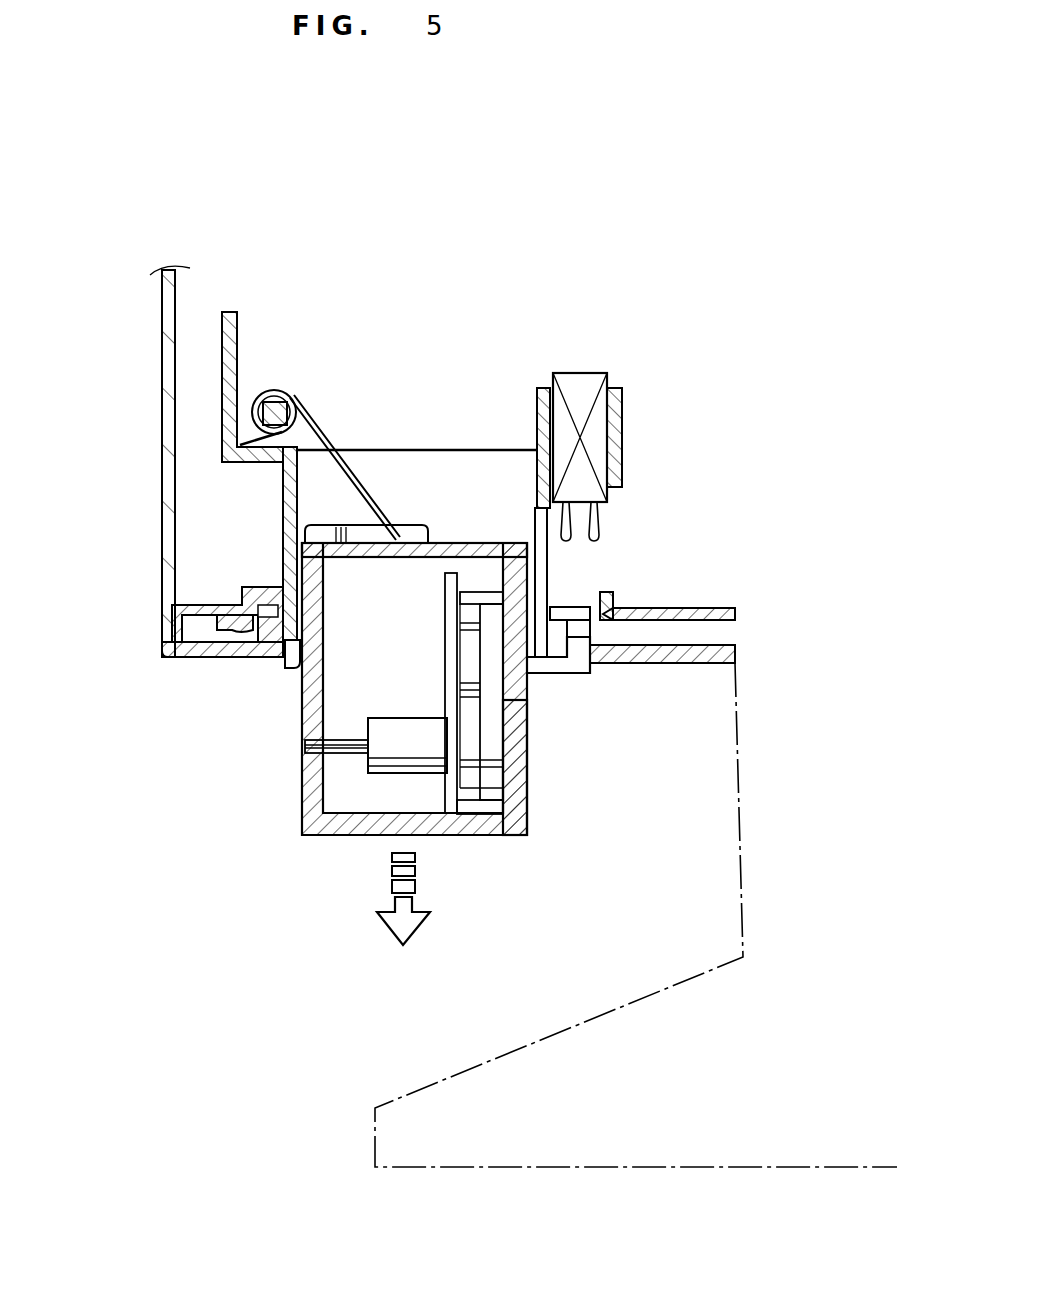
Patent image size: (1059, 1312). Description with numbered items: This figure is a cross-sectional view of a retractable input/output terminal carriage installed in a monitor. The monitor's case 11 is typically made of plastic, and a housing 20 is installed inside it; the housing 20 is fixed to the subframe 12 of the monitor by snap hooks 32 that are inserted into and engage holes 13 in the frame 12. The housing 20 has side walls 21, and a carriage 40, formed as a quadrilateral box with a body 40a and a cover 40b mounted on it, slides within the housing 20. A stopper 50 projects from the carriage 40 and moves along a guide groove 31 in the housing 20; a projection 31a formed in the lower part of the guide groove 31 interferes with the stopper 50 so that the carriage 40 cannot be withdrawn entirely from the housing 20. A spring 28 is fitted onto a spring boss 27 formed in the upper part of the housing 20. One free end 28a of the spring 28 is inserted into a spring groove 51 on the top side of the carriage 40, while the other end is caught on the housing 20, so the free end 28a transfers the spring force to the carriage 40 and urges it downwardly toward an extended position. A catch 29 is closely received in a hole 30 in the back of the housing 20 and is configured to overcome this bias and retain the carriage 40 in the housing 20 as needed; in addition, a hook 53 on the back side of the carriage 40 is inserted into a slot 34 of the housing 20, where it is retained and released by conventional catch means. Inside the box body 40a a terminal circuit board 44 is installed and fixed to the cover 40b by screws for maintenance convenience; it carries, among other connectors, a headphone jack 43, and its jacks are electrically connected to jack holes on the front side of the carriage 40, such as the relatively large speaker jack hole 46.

The case 11 is at (162, 543).
The subframe 12 is at (197, 600).
The holes 13 is at (630, 612).
The housing 20 is at (225, 450).
The side walls 21 is at (308, 470).
The spring boss 27 is at (258, 415).
The spring 28 is at (277, 385).
The free end 28a is at (347, 468).
The catch 29 is at (582, 392).
The hole 30 is at (613, 395).
The guide groove 31 is at (285, 512).
The projection 31a is at (293, 660).
The snap hooks 32 is at (262, 637).
The slot 34 is at (545, 585).
The carriage 40 is at (300, 838).
The body 40a is at (447, 543).
The cover 40b is at (522, 808).
The headphone jack 43 is at (305, 752).
The terminal circuit board 44 is at (455, 812).
The speaker jack hole 46 is at (305, 740).
The stopper 50 is at (255, 642).
The spring groove 51 is at (417, 533).
The hook 53 is at (605, 605).